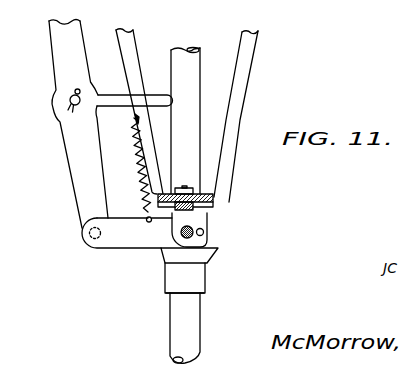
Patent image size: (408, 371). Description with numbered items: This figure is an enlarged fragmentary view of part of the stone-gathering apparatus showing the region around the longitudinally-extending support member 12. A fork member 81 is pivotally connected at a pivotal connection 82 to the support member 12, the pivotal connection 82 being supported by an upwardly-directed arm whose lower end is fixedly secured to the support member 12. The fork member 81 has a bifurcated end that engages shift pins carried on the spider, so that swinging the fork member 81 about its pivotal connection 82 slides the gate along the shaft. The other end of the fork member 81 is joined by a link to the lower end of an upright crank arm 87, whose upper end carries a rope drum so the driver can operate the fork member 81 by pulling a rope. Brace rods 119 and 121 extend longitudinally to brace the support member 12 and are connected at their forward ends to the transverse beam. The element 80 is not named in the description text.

The support member 12 is at (199, 79).
The arm 80 is at (132, 246).
The fork member 81 is at (69, 142).
The pivotal connection 82 is at (80, 98).
The upright crank arm 87 is at (205, 231).
The brace rod 119 is at (131, 44).
The brace rod 121 is at (254, 47).